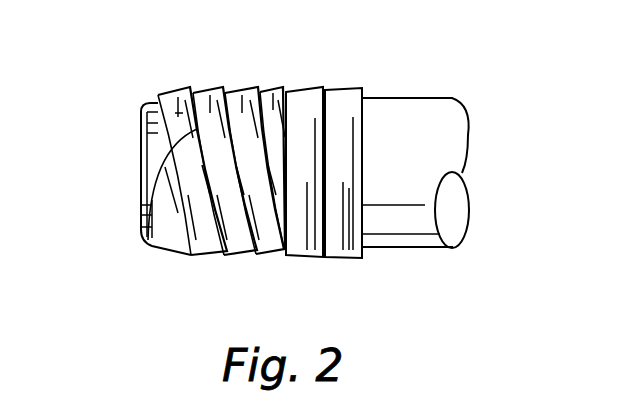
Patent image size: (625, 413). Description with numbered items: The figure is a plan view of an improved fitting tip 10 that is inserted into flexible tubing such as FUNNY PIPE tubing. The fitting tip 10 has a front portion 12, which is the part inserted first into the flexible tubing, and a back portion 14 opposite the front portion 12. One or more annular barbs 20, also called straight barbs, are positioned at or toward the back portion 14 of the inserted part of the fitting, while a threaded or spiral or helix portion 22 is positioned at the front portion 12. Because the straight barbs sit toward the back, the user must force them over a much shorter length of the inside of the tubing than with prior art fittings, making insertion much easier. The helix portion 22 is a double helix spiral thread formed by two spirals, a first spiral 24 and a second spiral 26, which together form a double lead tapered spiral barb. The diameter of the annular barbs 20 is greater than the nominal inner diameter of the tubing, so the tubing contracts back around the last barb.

The fitting tip 10 is at (327, 67).
The front portion 12 is at (129, 266).
The back portion 14 is at (405, 276).
The annular barbs 20 is at (287, 250).
The threaded or spiral or helix portion 22 is at (195, 72).
The first spiral 24 is at (272, 80).
The second spiral 26 is at (256, 135).